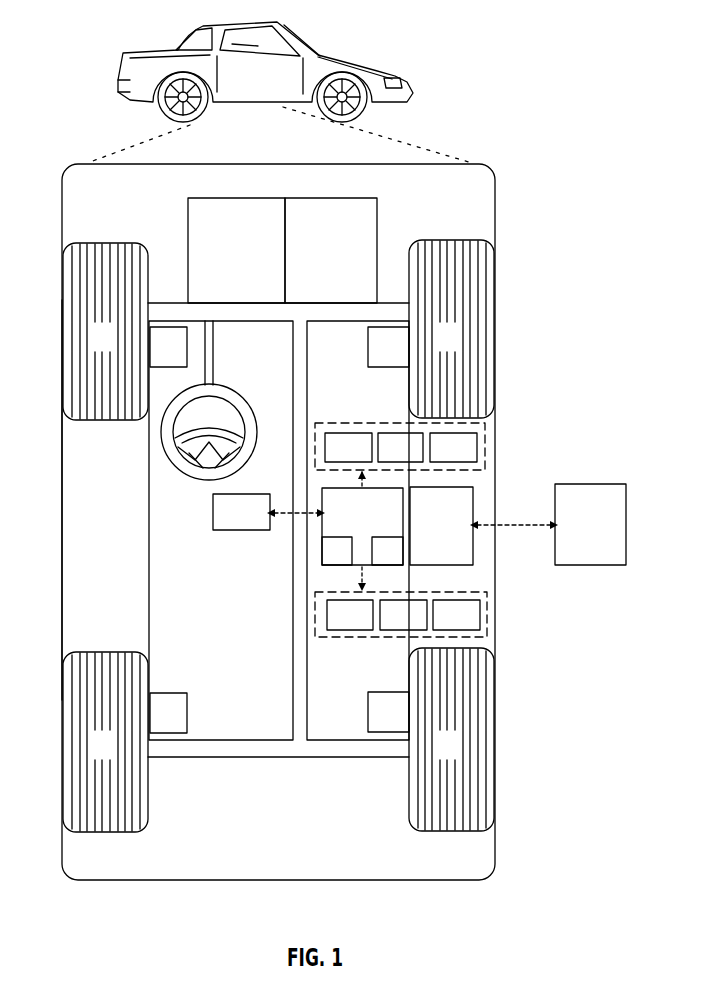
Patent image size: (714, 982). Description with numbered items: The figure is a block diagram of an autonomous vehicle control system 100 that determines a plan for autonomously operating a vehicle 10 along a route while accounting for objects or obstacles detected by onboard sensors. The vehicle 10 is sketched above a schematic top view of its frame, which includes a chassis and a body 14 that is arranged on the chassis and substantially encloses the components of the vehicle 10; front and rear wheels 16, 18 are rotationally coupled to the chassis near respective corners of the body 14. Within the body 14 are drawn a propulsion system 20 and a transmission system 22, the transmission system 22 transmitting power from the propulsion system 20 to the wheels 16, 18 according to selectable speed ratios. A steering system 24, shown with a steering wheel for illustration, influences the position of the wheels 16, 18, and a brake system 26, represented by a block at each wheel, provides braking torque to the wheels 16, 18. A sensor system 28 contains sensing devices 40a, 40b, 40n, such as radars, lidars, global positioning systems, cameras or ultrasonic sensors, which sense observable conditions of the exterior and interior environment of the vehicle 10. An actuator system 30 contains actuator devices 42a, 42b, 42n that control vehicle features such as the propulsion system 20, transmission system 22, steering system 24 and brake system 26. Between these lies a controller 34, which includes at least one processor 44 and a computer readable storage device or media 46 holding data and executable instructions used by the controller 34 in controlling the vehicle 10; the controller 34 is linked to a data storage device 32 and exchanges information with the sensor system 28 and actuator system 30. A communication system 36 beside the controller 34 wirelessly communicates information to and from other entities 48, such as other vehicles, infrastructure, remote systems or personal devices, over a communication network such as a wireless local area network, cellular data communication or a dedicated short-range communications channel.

The vehicle 10 is at (123, 76).
The autonomous vehicle control system 100 is at (521, 156).
The body 14 is at (62, 523).
The front wheels 16 is at (278, 330).
The rear wheels 18 is at (278, 740).
The propulsion system 20 is at (226, 259).
The transmission system 22 is at (321, 259).
The steering system 24 is at (237, 339).
The brake system 26 is at (158, 356).
The sensor system 28 is at (358, 424).
The actuator system 30 is at (356, 643).
The data storage device 32 is at (231, 522).
The controller 34 is at (352, 522).
The communication system 36 is at (431, 534).
The sensing device 40a is at (334, 457).
The sensing device 40b is at (386, 457).
The sensing device 40n is at (439, 457).
The actuator device 42a is at (336, 624).
The actuator device 42b is at (389, 624).
The actuator device 42n is at (442, 624).
The processor 44 is at (327, 560).
The computer readable storage device or media 46 is at (377, 560).
The other entities 48 is at (580, 534).